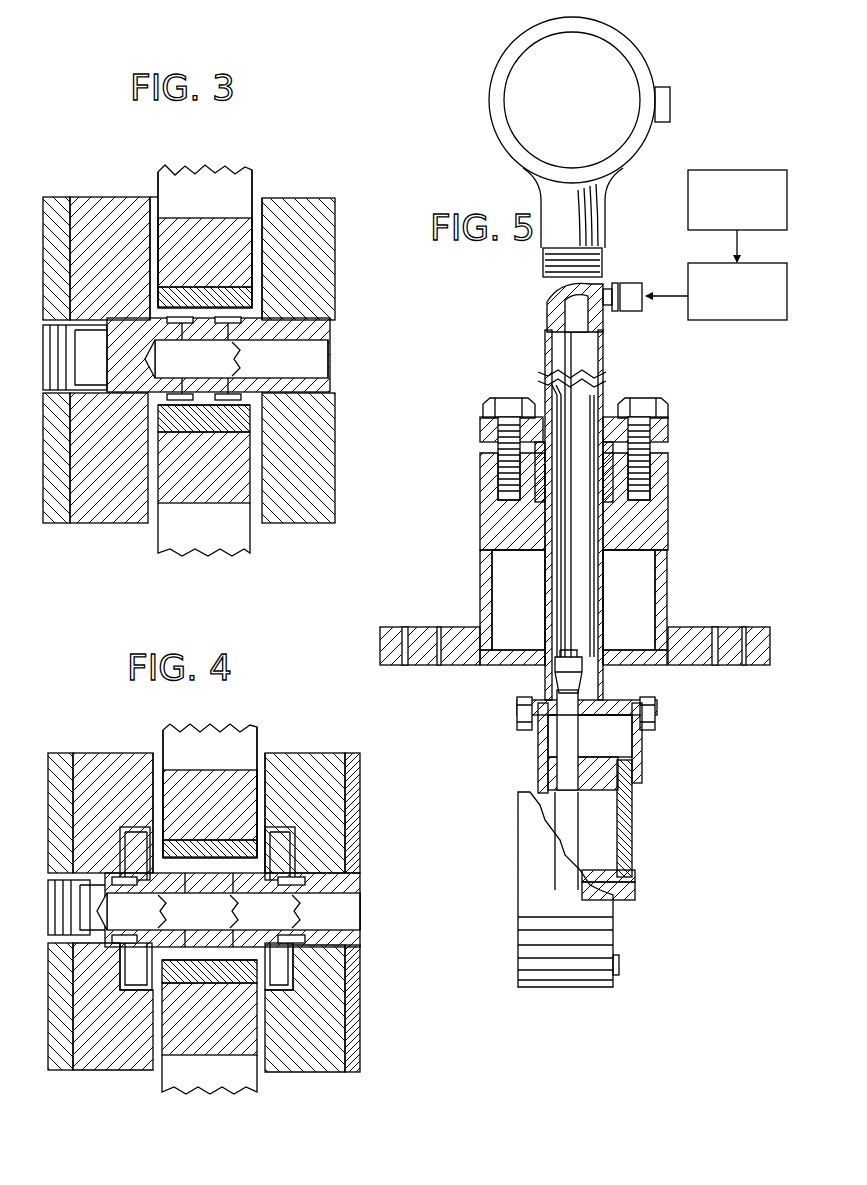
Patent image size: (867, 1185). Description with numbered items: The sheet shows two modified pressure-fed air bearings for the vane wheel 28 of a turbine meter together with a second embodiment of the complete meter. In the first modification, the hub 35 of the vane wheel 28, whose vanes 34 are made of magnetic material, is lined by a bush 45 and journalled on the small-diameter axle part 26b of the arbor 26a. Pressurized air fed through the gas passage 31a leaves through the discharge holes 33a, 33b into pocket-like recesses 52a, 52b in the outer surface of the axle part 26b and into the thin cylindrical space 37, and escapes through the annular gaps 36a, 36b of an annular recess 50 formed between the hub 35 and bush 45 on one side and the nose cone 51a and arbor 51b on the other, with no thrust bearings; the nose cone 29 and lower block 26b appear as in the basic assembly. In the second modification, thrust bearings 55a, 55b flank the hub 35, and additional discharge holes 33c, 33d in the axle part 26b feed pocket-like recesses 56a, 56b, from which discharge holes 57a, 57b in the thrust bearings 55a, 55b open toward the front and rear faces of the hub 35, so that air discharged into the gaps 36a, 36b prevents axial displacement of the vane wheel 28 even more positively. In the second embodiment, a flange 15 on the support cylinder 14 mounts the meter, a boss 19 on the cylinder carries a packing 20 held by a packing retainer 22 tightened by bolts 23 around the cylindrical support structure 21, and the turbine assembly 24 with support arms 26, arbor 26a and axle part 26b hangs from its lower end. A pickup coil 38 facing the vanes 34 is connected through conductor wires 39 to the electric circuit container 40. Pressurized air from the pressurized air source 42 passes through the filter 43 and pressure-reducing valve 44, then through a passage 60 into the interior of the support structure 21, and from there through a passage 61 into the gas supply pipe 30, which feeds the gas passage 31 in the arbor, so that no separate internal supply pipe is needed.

In FIG. 5, the support cylinder 14 is at (668, 553).
In FIG. 5, the flange 15 is at (452, 627).
In FIG. 5, the boss 19 is at (668, 478).
In FIG. 5, the packing 20 is at (612, 548).
In FIG. 5, the turbine meter support structure 21 is at (605, 380).
In FIG. 5, the packing retainer 22 is at (668, 433).
In FIG. 5, the bolts 23 is at (658, 400).
In FIG. 5, the turbine assembly 24 is at (512, 938).
In FIG. 5, the support arms 26 is at (610, 905).
In FIG. 4, the arbor 26a is at (352, 1067).
In FIG. 3, the axle part 26b is at (252, 397).
In FIG. 4, the axle part 26b is at (275, 945).
In FIG. 3, the vane wheel 28 is at (223, 173).
In FIG. 4, the vane wheel 28 is at (228, 727).
In FIG. 5, the vane wheel 28 is at (553, 810).
In FIG. 3, the nose cone 29 is at (55, 518).
In FIG. 4, the nose cone 29 is at (62, 1068).
In FIG. 5, the gas supply pipe 30 is at (627, 825).
In FIG. 5, the gas passage 31 is at (634, 885).
In FIG. 3, the gas passage 31a is at (318, 362).
In FIG. 4, the gas passage 31a is at (348, 918).
In FIG. 3, the gas discharge hole 33a is at (182, 326).
In FIG. 4, the gas discharge hole 33a is at (185, 893).
In FIG. 3, the gas discharge hole 33b is at (228, 328).
In FIG. 4, the gas discharge hole 33b is at (235, 893).
In FIG. 4, the air discharge hole 33c is at (121, 888).
In FIG. 4, the air discharge hole 33d is at (290, 893).
In FIG. 3, the vanes 34 is at (183, 177).
In FIG. 4, the vanes 34 is at (197, 727).
In FIG. 3, the hub 35 is at (207, 503).
In FIG. 4, the hub 35 is at (205, 1055).
In FIG. 3, the annular gap 36a is at (152, 202).
In FIG. 4, the annular gap 36a is at (158, 757).
In FIG. 3, the annular gap 36b is at (257, 207).
In FIG. 4, the annular gap 36b is at (262, 760).
In FIG. 3, the cylindrical space 37 is at (187, 410).
In FIG. 4, the cylindrical space 37 is at (183, 960).
In FIG. 5, the pickup coil 38 is at (558, 742).
In FIG. 5, the conductor wires 39 is at (548, 395).
In FIG. 5, the electric circuit container 40 is at (490, 108).
In FIG. 5, the pressurized air source 42 is at (727, 170).
In FIG. 5, the filter 43 is at (730, 330).
In FIG. 5, the pressure-reducing valve 44 is at (628, 280).
In FIG. 3, the bush 45 is at (222, 420).
In FIG. 4, the bush 45 is at (215, 975).
In FIG. 3, the annular recess 50 is at (153, 185).
In FIG. 3, the nose cone 51a is at (93, 198).
In FIG. 3, the arbor 51b is at (307, 198).
In FIG. 3, the pocket-like recess 52a is at (177, 312).
In FIG. 3, the pocket-like recess 52b is at (240, 312).
In FIG. 4, the thrust bearing 55a is at (93, 755).
In FIG. 4, the thrust bearing 55b is at (320, 755).
In FIG. 4, the pocket-like recess 56a is at (118, 878).
In FIG. 4, the pocket-like recess 56b is at (295, 878).
In FIG. 4, the discharge hole 57a is at (128, 827).
In FIG. 4, the discharge hole 57b is at (280, 827).
In FIG. 5, the passage 60 is at (603, 312).
In FIG. 5, the passage 61 is at (622, 752).